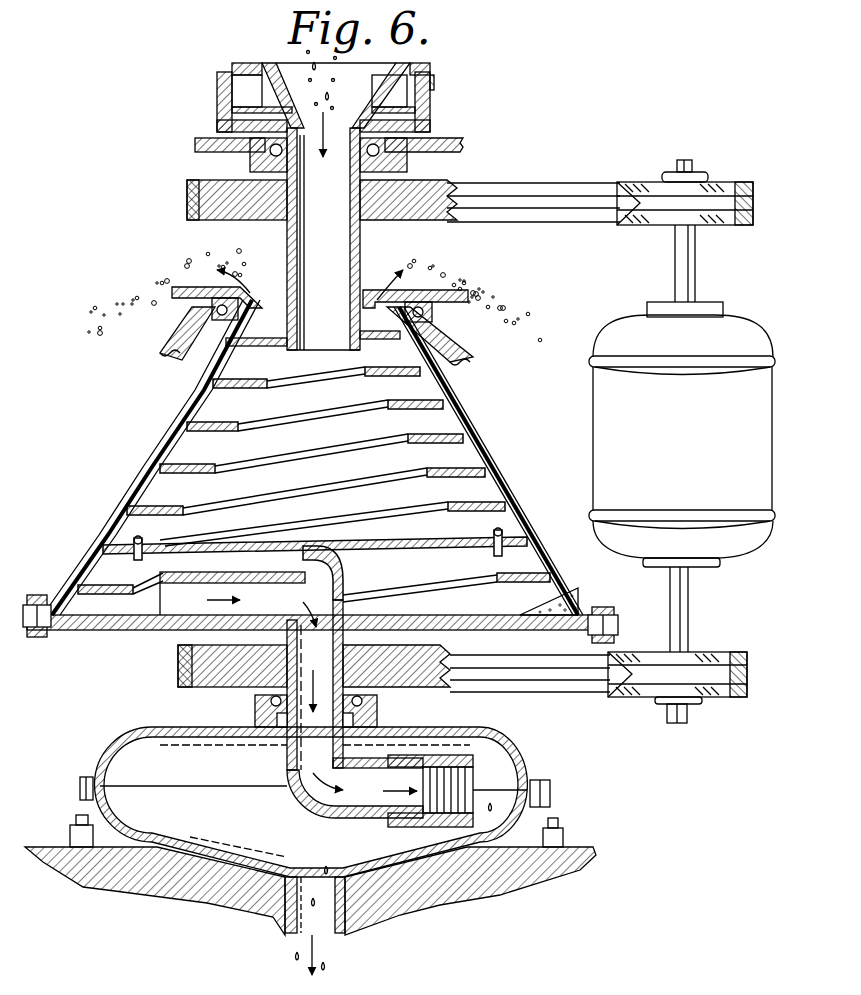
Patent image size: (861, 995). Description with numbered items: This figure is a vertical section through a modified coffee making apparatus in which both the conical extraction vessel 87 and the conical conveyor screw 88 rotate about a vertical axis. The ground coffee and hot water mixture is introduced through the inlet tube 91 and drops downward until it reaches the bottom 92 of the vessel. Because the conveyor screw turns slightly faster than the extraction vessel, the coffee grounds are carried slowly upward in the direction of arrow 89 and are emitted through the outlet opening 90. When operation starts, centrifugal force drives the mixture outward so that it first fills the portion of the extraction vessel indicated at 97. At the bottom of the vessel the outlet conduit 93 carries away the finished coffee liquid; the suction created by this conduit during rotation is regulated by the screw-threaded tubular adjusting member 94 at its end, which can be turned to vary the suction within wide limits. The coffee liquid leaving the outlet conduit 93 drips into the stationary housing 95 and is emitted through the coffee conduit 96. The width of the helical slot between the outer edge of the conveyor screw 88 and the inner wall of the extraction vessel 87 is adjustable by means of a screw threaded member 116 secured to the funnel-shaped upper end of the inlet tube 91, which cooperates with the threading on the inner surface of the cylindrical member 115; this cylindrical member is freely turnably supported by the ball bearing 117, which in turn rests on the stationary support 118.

The conical extraction vessel 87 is at (498, 467).
The conical conveyor screw 88 is at (467, 420).
The arrow 89 is at (92, 417).
The outlet opening 90 is at (377, 300).
The inlet tube 91 is at (313, 253).
The bottom 92 is at (127, 630).
The outlet conduit 93 is at (197, 602).
The screw-threaded tubular adjusting member 94 is at (443, 827).
The stationary housing 95 is at (395, 852).
The coffee conduit 96 is at (298, 913).
The portion of the extraction vessel 97 is at (87, 605).
The cylindrical member 115 is at (432, 100).
The screw threaded member 116 is at (413, 63).
The ball bearing 117 is at (428, 136).
The stationary support 118 is at (438, 154).